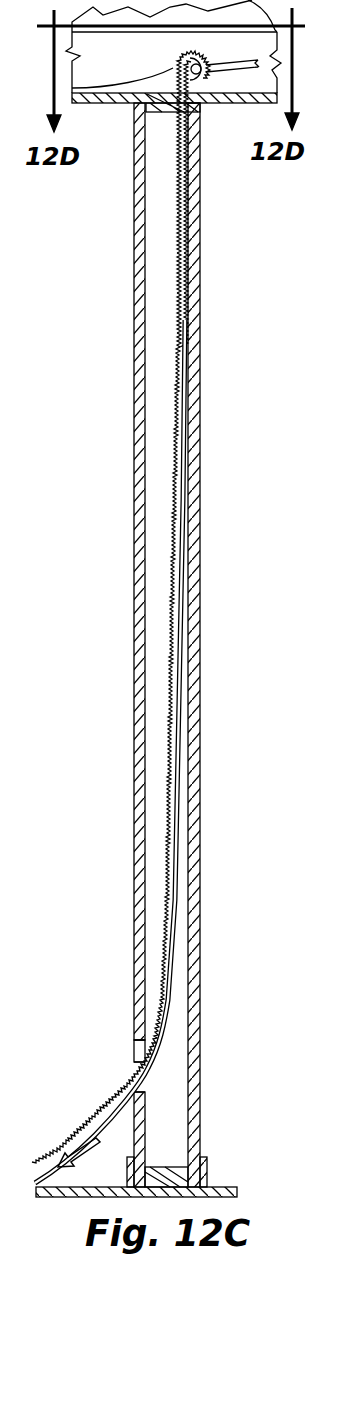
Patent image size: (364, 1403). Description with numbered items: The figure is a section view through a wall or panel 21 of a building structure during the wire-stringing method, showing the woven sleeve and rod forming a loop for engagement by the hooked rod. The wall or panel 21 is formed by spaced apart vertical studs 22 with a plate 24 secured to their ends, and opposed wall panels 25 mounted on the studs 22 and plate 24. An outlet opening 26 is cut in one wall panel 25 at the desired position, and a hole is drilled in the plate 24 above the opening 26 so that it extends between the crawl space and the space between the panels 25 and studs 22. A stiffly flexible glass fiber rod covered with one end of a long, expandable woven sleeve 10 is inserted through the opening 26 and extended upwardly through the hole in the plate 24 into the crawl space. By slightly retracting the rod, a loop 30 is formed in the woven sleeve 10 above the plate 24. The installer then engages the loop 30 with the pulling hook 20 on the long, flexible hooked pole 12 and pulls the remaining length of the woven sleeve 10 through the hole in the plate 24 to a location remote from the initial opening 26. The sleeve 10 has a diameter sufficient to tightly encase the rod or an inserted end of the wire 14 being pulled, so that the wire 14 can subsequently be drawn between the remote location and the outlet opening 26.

The woven tubular sleeve 10 is at (170, 700).
The hooked pole 12 is at (240, 68).
The wire 14 is at (176, 925).
The pulling hook 20 is at (203, 58).
The wall or panel 21 is at (136, 650).
The stud 22 is at (162, 320).
The plate 24 is at (160, 112).
The wall panel 25 is at (134, 443).
The outlet opening 26 is at (142, 1052).
The loop 30 is at (72, 88).